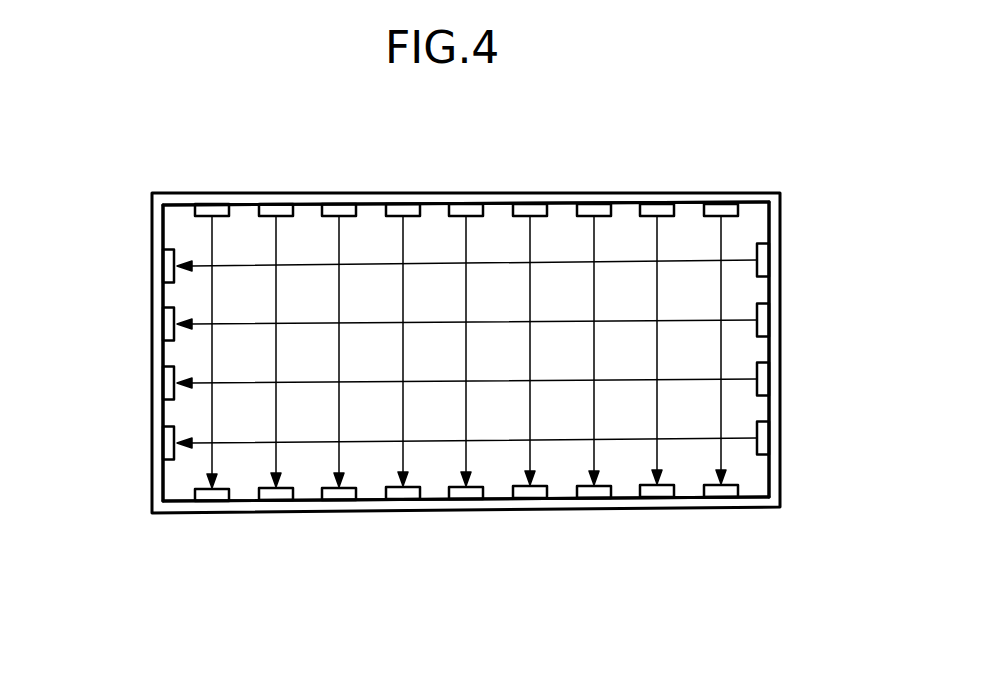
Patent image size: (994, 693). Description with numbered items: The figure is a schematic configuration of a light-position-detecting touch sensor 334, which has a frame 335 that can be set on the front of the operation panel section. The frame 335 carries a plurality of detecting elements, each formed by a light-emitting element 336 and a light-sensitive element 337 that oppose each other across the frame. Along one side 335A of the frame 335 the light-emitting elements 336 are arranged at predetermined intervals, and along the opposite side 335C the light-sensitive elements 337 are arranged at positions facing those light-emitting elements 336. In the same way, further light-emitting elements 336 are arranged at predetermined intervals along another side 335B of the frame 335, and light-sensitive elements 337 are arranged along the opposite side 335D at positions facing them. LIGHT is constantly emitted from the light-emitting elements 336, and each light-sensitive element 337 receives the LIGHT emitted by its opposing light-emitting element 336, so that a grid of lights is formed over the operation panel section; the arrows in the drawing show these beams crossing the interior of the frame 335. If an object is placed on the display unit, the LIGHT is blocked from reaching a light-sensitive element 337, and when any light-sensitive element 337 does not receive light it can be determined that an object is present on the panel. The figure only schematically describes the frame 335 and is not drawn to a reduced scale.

The light-position-detecting touch sensor 334 is at (740, 171).
The frame 335 is at (630, 198).
The side of the frame 335A is at (470, 198).
The side of the frame 335B is at (778, 428).
The side of the frame 335C is at (447, 505).
The side of the frame 335D is at (158, 433).
The light-emitting element 336 is at (337, 204).
The light-sensitive element 337 is at (163, 265).
The light LIGHT is at (559, 382).